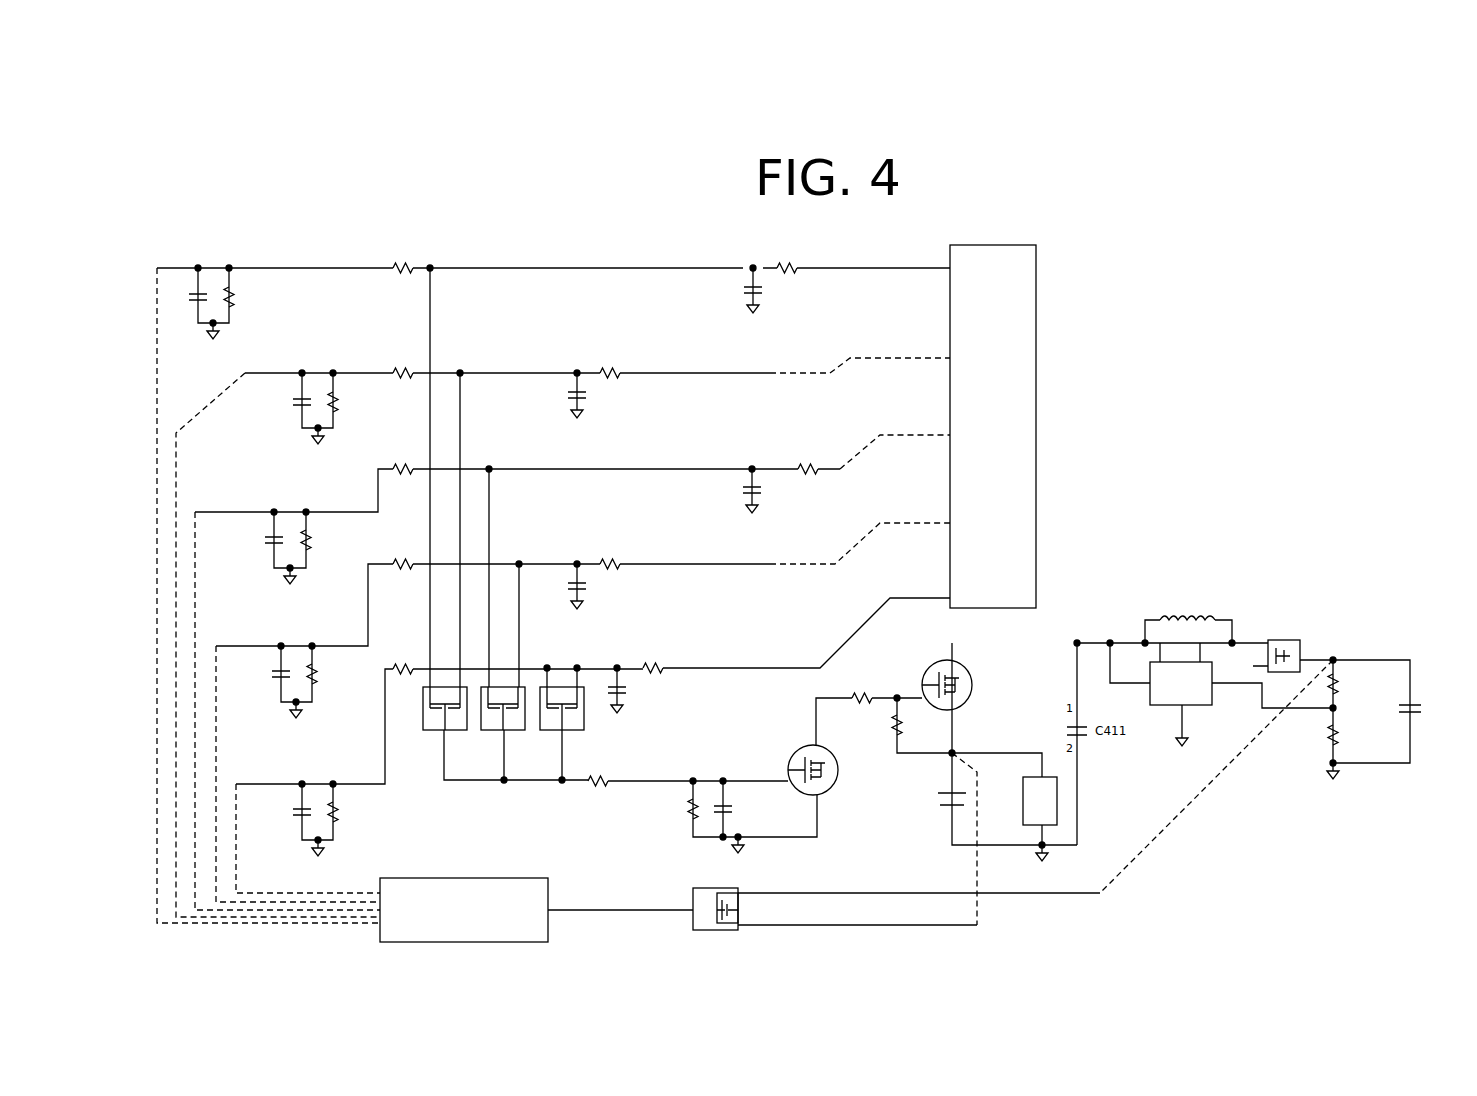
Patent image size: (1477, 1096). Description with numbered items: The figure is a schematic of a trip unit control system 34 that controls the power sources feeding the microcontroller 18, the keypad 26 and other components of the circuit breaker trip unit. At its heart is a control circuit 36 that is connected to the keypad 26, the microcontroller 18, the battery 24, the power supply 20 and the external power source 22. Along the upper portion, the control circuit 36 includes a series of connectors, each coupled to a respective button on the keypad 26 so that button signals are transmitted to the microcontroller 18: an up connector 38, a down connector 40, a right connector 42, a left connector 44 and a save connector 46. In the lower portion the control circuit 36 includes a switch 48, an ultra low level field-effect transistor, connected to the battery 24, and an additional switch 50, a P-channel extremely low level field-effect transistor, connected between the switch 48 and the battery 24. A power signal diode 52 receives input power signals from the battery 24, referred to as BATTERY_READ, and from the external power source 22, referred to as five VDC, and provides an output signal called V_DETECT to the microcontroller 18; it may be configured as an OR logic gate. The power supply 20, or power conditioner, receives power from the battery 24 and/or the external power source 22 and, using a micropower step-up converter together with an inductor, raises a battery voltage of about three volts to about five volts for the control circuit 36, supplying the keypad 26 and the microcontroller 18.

The microcontroller 18 is at (463, 942).
The power supply 20 is at (1203, 712).
The external power source 22 is at (1392, 640).
The battery 24 is at (950, 815).
The keypad 26 is at (1036, 382).
The trip unit control system 34 is at (1208, 325).
The control circuit 36 is at (466, 801).
The up connector 38 is at (910, 263).
The down connector 40 is at (556, 372).
The right connector 42 is at (556, 468).
The left connector 44 is at (556, 563).
The save connector 46 is at (698, 669).
The switch 48 is at (800, 745).
The additional switch 50 is at (937, 662).
The power signal diode 52 is at (713, 940).